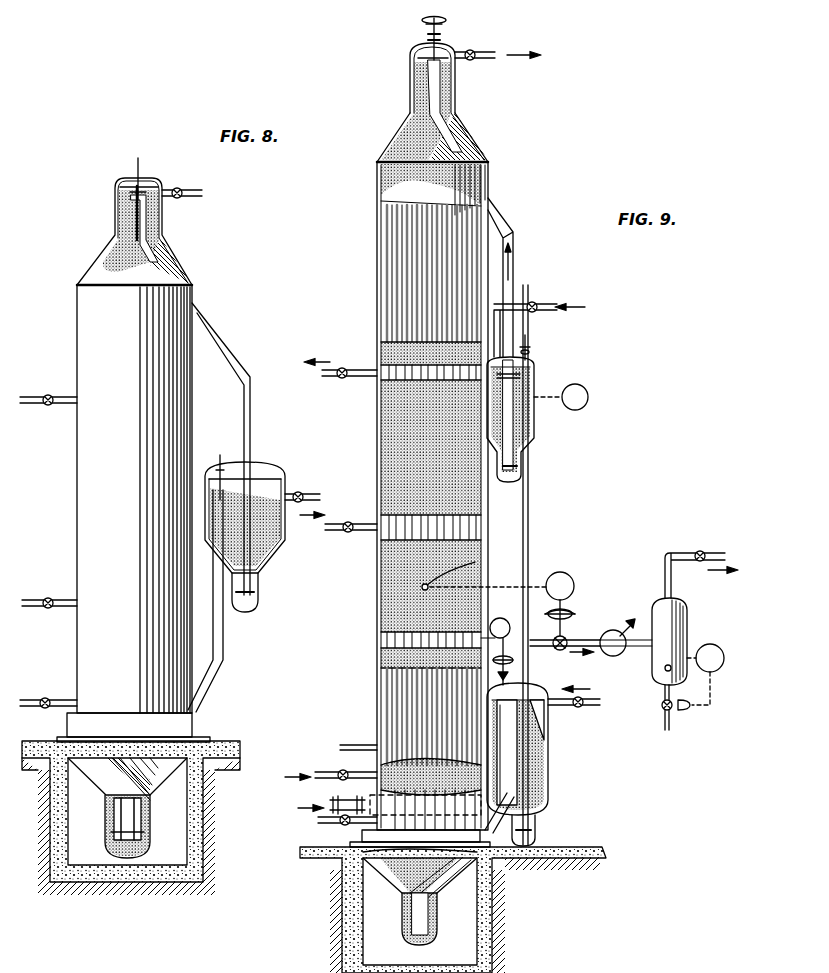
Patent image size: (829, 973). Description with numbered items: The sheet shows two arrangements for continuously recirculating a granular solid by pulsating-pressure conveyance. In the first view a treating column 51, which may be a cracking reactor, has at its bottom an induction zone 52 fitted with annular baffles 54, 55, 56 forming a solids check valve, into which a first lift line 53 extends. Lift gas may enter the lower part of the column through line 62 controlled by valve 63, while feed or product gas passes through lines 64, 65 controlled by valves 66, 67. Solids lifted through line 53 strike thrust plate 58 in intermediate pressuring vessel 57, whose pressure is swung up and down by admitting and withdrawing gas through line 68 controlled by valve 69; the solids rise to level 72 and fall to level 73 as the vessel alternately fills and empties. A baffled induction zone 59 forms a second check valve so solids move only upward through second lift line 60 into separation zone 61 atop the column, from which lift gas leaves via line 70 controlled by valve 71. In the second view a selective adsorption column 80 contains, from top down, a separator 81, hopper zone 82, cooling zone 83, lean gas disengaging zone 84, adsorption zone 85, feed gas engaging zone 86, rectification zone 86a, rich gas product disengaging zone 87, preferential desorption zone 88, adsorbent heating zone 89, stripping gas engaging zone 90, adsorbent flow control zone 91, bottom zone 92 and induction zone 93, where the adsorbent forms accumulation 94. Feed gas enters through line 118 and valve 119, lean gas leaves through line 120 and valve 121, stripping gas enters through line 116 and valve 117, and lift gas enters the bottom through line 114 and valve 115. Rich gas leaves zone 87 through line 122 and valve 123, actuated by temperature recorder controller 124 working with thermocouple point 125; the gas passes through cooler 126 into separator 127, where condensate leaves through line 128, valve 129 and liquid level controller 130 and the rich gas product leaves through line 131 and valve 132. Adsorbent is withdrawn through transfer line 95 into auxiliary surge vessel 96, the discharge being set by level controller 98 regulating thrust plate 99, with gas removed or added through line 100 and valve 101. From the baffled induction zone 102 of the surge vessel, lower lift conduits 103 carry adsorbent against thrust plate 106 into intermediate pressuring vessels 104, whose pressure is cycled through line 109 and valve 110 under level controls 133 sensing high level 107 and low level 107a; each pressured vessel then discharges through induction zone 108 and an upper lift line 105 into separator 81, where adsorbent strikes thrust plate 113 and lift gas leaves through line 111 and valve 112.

In FIG. 8, the treating column 51 is at (77, 313).
In FIG. 8, the induction zone 52 is at (150, 838).
In FIG. 8, the first lift line 53 is at (205, 690).
In FIG. 8, the annular baffle 54 is at (105, 808).
In FIG. 8, the annular baffle 55 is at (150, 804).
In FIG. 8, the annular baffle 56 is at (105, 840).
In FIG. 8, the intermediate pressuring vessel 57 is at (290, 455).
In FIG. 8, the thrust plate 58 is at (228, 442).
In FIG. 8, the induction zone 59 is at (258, 600).
In FIG. 8, the second lift line 60 is at (263, 377).
In FIG. 8, the separation zone 61 is at (150, 180).
In FIG. 8, the line 62 is at (38, 697).
In FIG. 8, the valve 63 is at (52, 695).
In FIG. 8, the line 64 is at (30, 405).
In FIG. 8, the line 65 is at (42, 598).
In FIG. 8, the valve 66 is at (56, 395).
In FIG. 8, the valve 67 is at (56, 595).
In FIG. 8, the line 68 is at (322, 497).
In FIG. 8, the valve 69 is at (300, 492).
In FIG. 8, the line 70 is at (185, 190).
In FIG. 8, the valve 71 is at (178, 198).
In FIG. 8, the solids level 72 is at (285, 515).
In FIG. 8, the solids level 73 is at (258, 568).
In FIG. 9, the selective adsorption column 80 is at (488, 168).
In FIG. 9, the separator 81 is at (410, 78).
In FIG. 9, the hopper zone 82 is at (405, 135).
In FIG. 9, the cooling zone 83 is at (405, 275).
In FIG. 9, the overhead gas product disengaging zone 84 is at (379, 363).
In FIG. 9, the adsorption zone 85 is at (425, 435).
In FIG. 9, the feed gas engaging zone 86 is at (377, 528).
In FIG. 9, the rectification zone 86a is at (405, 582).
In FIG. 9, the rich gas product disengaging zone 87 is at (381, 640).
In FIG. 9, the preferential desorption zone 88 is at (381, 663).
In FIG. 9, the adsorbent heating zone 89 is at (400, 705).
In FIG. 9, the stripping gas engaging zone 90 is at (377, 770).
In FIG. 9, the adsorbent flow control zone 91 is at (390, 810).
In FIG. 9, the bottom zone 92 is at (365, 875).
In FIG. 9, the induction zone 93 is at (402, 930).
In FIG. 9, the accumulation 94 is at (402, 915).
In FIG. 9, the transfer line 95 is at (490, 840).
In FIG. 9, the auxiliary surge vessel 96 is at (548, 775).
In FIG. 9, the level controller 98 is at (502, 616).
In FIG. 9, the thrust plate 99 is at (496, 661).
In FIG. 9, the line 100 is at (565, 708).
In FIG. 9, the valve 101 is at (582, 708).
In FIG. 9, the induction zone 102 is at (535, 830).
In FIG. 9, the lower lift conduit 103 is at (528, 518).
In FIG. 9, the intermediate pressuring vessels 104 is at (534, 440).
In FIG. 9, the upper lift lines 105 is at (513, 277).
In FIG. 9, the thrust plate 106 is at (532, 355).
In FIG. 9, the adsorbent level 107 is at (534, 372).
In FIG. 9, the low adsorbent level 107a is at (497, 478).
In FIG. 9, the induction zone 108 is at (521, 470).
In FIG. 9, the line 109 is at (533, 313).
In FIG. 9, the valve 110 is at (535, 302).
In FIG. 9, the line 111 is at (472, 50).
In FIG. 9, the valve 112 is at (474, 62).
In FIG. 9, the thrust plate 113 is at (424, 45).
In FIG. 9, the line 114 is at (318, 815).
In FIG. 9, the valve 115 is at (343, 826).
In FIG. 9, the line 116 is at (318, 770).
In FIG. 9, the valve 117 is at (340, 780).
In FIG. 9, the line 118 is at (365, 532).
In FIG. 9, the valve 119 is at (350, 534).
In FIG. 9, the line 120 is at (360, 378).
In FIG. 9, the valve 121 is at (343, 380).
In FIG. 9, the line 122 is at (552, 648).
In FIG. 9, the valve 123 is at (566, 636).
In FIG. 9, the temperature recorder controller 124 is at (572, 578).
In FIG. 9, the thermocouple point 125 is at (468, 569).
In FIG. 9, the rich gas product cooler 126 is at (604, 652).
In FIG. 9, the separator 127 is at (687, 608).
In FIG. 9, the line 128 is at (665, 698).
In FIG. 9, the valve 129 is at (672, 712).
In FIG. 9, the liquid level controller 130 is at (724, 655).
In FIG. 9, the line 131 is at (698, 550).
In FIG. 9, the valve 132 is at (712, 550).
In FIG. 9, the level controls 133 is at (588, 397).